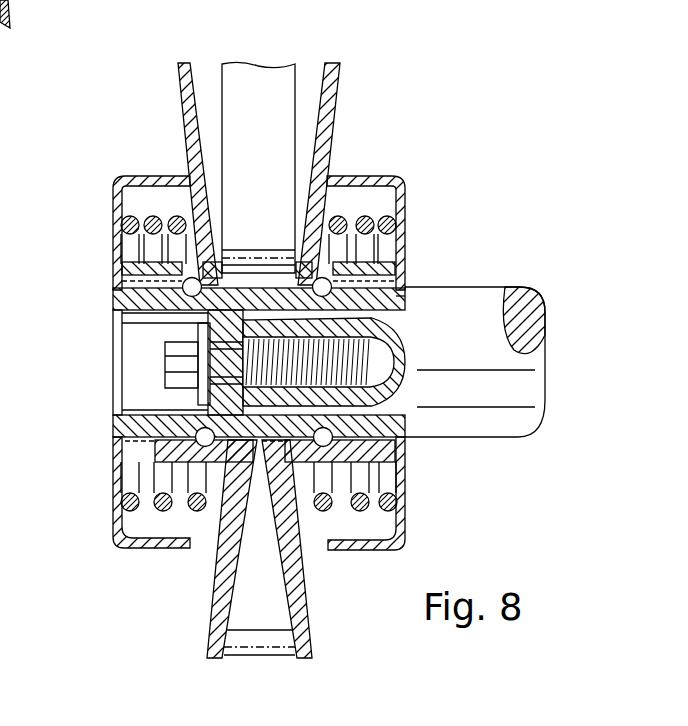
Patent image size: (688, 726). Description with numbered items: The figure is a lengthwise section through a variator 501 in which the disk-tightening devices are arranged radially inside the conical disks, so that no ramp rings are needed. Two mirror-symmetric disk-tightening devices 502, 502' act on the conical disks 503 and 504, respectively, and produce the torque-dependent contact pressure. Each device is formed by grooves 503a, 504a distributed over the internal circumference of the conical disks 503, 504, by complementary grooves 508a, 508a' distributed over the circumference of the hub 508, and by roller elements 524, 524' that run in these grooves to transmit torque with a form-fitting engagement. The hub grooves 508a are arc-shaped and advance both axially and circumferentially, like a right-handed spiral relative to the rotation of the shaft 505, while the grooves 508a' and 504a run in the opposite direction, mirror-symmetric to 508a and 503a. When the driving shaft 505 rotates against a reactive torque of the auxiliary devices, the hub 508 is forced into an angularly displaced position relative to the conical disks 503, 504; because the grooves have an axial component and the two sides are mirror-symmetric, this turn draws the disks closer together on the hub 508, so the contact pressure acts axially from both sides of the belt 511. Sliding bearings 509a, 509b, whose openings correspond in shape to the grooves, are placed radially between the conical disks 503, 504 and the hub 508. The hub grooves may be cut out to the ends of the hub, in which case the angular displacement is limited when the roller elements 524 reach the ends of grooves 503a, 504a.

The variator 501 is at (404, 77).
The disk-tightening device 502 is at (203, 549).
The disk-tightening device 502' is at (330, 549).
The conical disk 503 is at (193, 122).
The groove 503a is at (118, 297).
The conical disk 504 is at (327, 122).
The groove 504a is at (403, 228).
The shaft 505 is at (482, 336).
The hub 508 is at (397, 275).
The groove profile 508a is at (214, 347).
The groove profile 508a' is at (449, 277).
The sliding bearing 509a is at (118, 455).
The sliding bearing 509b is at (385, 440).
The belt 511 is at (270, 638).
The roller element 524 is at (119, 233).
The roller element 524' is at (408, 211).